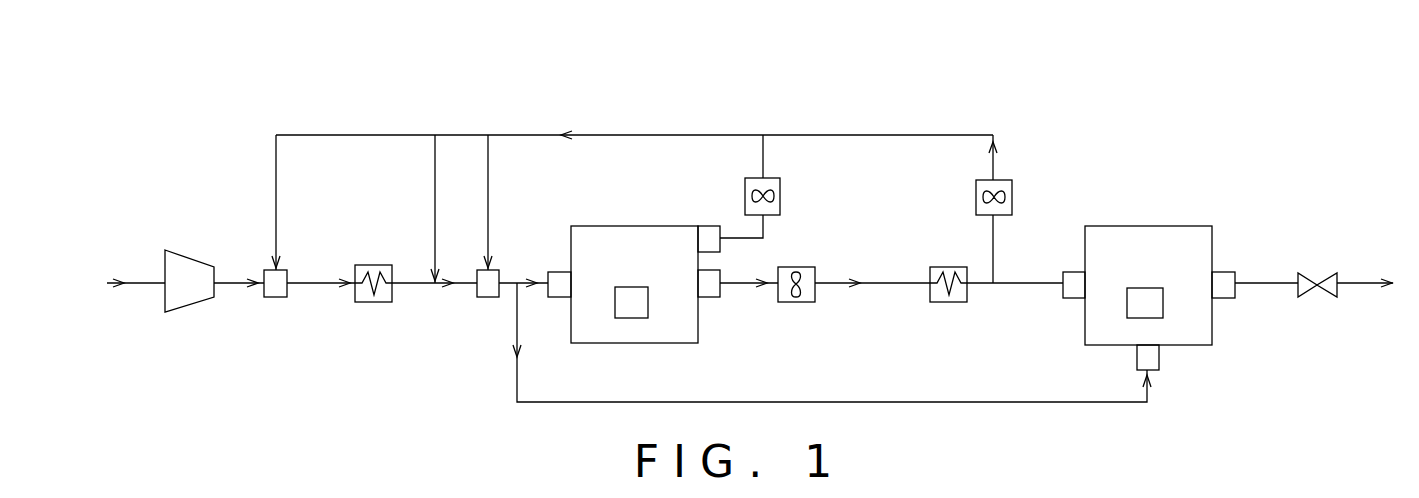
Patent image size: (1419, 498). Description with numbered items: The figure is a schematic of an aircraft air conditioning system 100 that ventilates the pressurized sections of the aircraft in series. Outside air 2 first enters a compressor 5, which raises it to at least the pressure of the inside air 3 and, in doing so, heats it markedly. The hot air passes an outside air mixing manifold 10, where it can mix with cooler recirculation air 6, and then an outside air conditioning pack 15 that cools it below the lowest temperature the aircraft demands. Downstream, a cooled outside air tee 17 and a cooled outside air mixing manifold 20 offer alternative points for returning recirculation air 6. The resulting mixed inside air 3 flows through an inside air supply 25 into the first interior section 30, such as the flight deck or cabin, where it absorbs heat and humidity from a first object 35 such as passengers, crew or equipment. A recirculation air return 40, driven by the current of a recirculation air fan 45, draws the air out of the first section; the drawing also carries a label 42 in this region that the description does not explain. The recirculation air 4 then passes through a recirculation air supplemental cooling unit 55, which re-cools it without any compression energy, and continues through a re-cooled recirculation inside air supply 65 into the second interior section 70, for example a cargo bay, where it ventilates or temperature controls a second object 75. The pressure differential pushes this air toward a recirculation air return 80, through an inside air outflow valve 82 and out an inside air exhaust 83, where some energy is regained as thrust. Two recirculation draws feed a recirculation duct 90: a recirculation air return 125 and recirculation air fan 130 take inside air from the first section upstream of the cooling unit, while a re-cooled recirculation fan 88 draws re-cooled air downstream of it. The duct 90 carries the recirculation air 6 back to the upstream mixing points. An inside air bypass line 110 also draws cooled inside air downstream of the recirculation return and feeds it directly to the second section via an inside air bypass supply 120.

The outside air 2 is at (108, 333).
The inside air 3 is at (664, 317).
The recirculation air 4 is at (707, 281).
The compressor 5 is at (178, 313).
The recirculation air 6 is at (772, 184).
The outside air mixing manifold 10 is at (276, 304).
The outside air conditioning pack 15 is at (375, 305).
The cooled outside air tee 17 is at (430, 302).
The cooled outside air mixing manifold 20 is at (482, 305).
The inside air supply 25 is at (553, 302).
The first interior section 30 is at (618, 348).
The first object 35 is at (621, 315).
The recirculation air return 40 is at (712, 300).
The transfer line 42 is at (845, 363).
The recirculation air fan 45 is at (787, 306).
The recirculation air supplemental cooling unit 55 is at (942, 307).
The re-cooled recirculation inside air supply 65 is at (1073, 270).
The second interior section 70 is at (1112, 350).
The second object 75 is at (1134, 315).
The recirculation air return 80 is at (1224, 268).
The inside air outflow valve 82 is at (1322, 295).
The inside air exhaust 83 is at (1365, 248).
The re-cooled recirculation fan 88 is at (1016, 190).
The recirculation duct 90 is at (633, 127).
The aircraft air conditioning system 100 is at (252, 182).
The inside air bypass line 110 is at (510, 382).
The inside air bypass supply 120 is at (1177, 354).
The recirculation air return 125 is at (716, 212).
The recirculation air fan 130 is at (783, 201).